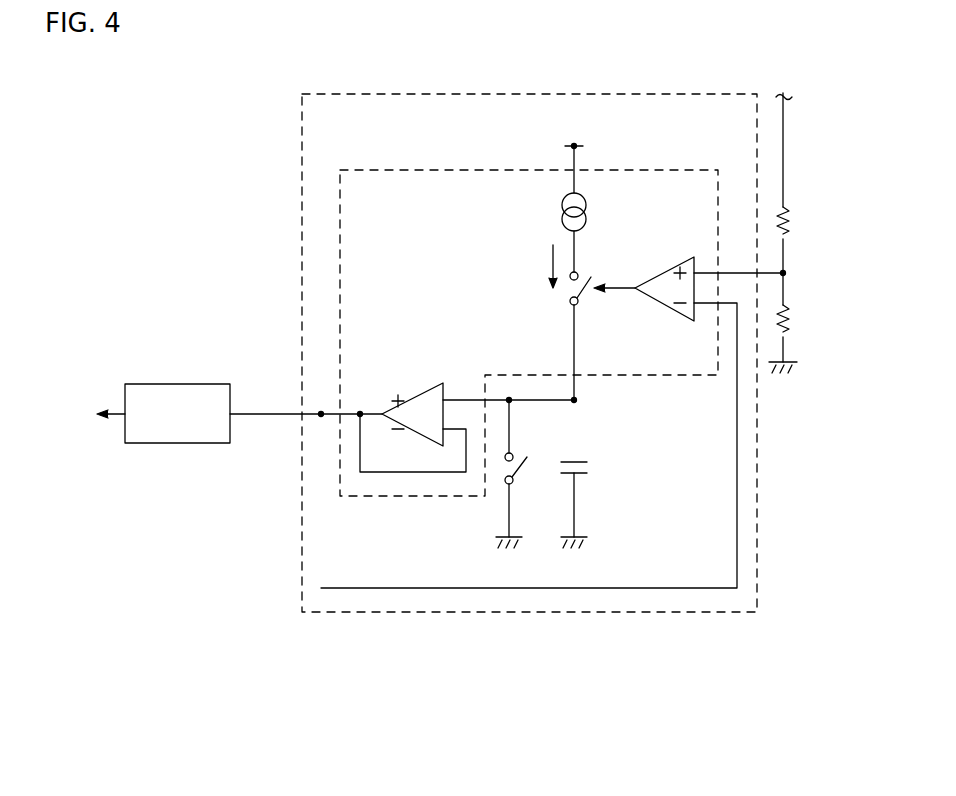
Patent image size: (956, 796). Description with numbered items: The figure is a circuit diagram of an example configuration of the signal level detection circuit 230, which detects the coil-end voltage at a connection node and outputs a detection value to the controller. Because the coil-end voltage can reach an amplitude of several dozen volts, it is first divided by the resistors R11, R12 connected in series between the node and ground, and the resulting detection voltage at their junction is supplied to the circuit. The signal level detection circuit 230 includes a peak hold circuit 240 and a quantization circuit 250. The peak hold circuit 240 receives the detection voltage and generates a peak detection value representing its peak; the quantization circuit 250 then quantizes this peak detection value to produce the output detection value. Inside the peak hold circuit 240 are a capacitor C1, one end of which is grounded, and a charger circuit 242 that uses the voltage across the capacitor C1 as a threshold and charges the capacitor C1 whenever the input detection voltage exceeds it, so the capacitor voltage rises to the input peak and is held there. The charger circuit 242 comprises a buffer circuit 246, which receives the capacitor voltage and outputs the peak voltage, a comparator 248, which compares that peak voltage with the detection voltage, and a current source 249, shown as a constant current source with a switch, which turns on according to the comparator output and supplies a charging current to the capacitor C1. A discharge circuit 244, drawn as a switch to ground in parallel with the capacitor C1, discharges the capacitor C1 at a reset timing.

The signal level detection circuit 230 is at (472, 675).
The peak hold circuit 240 is at (544, 94).
The charger circuit 242 is at (438, 170).
The discharge circuit 244 is at (533, 470).
The buffer circuit 246 is at (404, 392).
The comparator 248 is at (655, 306).
The current source 249 is at (605, 313).
The quantization circuit 250 is at (178, 384).
The capacitor C1 is at (598, 470).
The resistor R11 is at (797, 224).
The resistor R12 is at (797, 322).